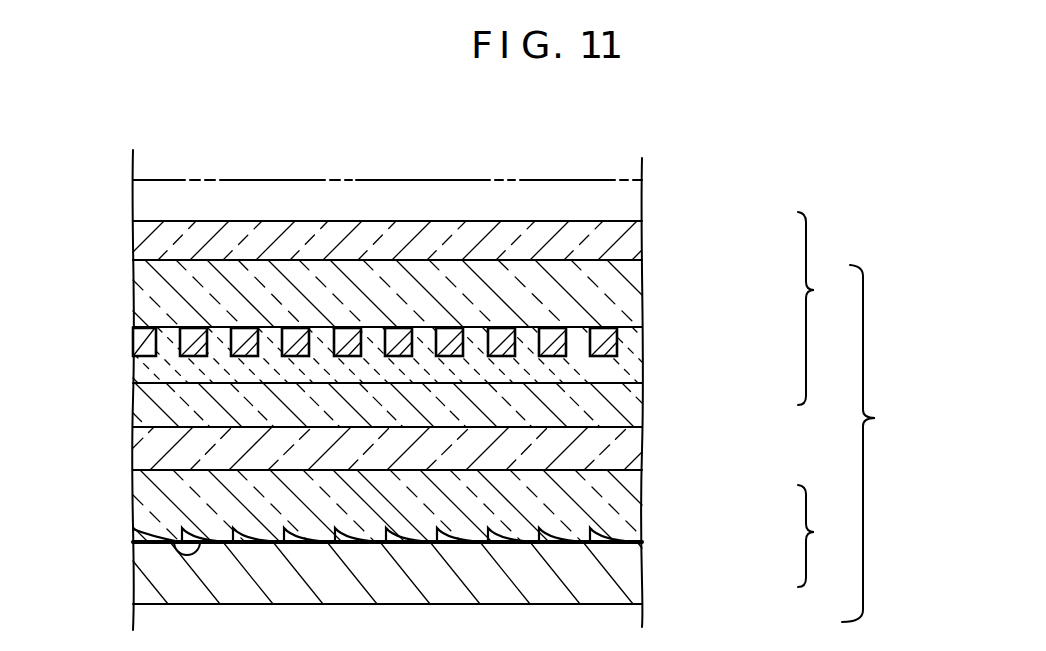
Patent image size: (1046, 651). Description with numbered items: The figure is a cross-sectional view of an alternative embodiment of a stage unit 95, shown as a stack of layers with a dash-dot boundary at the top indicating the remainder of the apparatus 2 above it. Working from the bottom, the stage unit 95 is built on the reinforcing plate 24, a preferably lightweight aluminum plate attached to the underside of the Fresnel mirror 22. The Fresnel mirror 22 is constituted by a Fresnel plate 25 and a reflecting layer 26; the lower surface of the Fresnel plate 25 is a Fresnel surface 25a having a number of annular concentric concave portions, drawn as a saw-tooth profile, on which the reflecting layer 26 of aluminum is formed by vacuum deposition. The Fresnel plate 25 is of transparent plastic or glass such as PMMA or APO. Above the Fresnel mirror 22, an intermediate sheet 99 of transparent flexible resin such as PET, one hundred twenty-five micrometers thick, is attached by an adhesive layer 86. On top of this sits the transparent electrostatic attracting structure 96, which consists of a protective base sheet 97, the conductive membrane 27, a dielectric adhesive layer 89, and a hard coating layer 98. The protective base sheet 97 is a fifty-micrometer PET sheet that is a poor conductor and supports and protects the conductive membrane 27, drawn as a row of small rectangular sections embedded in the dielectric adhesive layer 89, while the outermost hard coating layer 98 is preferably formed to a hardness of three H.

The recording head 2 is at (453, 180).
The Fresnel mirror 22 is at (825, 536).
The reinforcing plate 24 is at (633, 587).
The Fresnel plate 25 is at (633, 499).
The Fresnel surface 25a is at (140, 530).
The reflecting layer 26 is at (603, 538).
The conductive membrane 27 is at (610, 341).
The adhesive layer 86 is at (632, 447).
The dielectric adhesive layer 89 is at (633, 366).
The stage unit 95 is at (879, 443).
The electrostatic attracting structure 96 is at (827, 308).
The protective base sheet 97 is at (633, 292).
The hard coating layer 98 is at (635, 237).
The intermediate sheet 99 is at (633, 407).